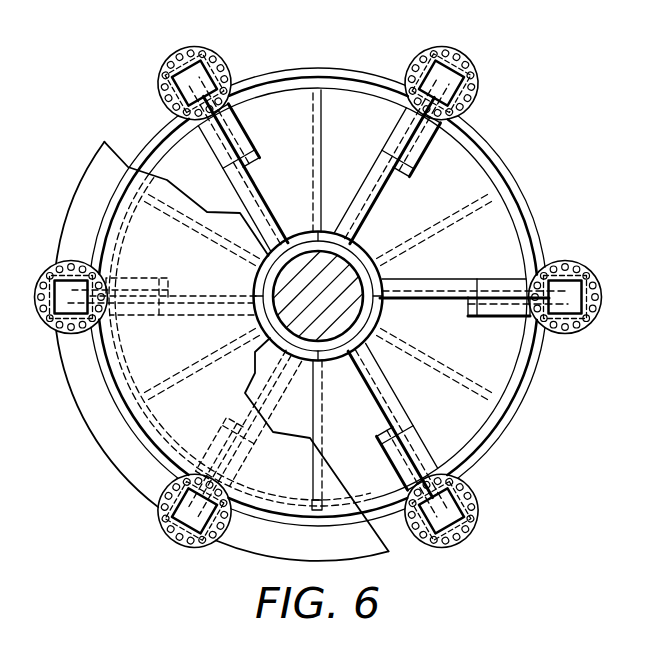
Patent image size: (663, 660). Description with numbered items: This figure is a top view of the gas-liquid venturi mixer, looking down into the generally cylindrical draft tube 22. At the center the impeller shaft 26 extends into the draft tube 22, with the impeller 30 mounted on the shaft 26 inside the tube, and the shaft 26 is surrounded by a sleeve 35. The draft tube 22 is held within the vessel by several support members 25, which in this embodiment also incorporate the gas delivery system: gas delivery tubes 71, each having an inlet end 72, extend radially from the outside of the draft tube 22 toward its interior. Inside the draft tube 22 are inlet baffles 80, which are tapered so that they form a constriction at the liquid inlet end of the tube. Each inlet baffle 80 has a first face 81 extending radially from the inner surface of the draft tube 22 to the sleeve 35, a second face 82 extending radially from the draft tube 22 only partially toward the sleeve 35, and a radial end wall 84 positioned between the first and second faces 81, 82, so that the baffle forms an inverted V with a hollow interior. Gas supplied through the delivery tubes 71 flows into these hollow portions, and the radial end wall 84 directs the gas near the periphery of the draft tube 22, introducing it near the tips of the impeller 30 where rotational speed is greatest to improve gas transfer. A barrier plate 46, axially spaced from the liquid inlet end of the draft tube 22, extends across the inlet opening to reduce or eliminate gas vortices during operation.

The draft tube 22 is at (486, 157).
The support members 25 is at (165, 68).
The impeller shaft 26 is at (360, 282).
The impeller 30 is at (352, 107).
The sleeve 35 is at (412, 378).
The barrier plate 46 is at (133, 347).
The gas delivery tubes 71 is at (455, 60).
The inlet end 72 is at (443, 66).
The inlet baffles 80 is at (236, 161).
The first face 81 is at (234, 188).
The second face 82 is at (235, 135).
The radial end wall 84 is at (251, 163).